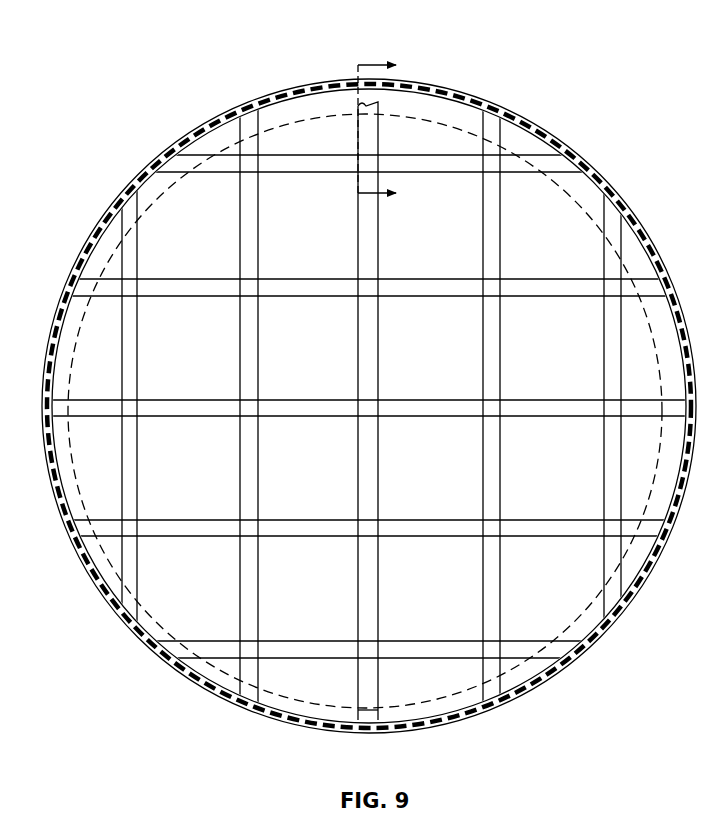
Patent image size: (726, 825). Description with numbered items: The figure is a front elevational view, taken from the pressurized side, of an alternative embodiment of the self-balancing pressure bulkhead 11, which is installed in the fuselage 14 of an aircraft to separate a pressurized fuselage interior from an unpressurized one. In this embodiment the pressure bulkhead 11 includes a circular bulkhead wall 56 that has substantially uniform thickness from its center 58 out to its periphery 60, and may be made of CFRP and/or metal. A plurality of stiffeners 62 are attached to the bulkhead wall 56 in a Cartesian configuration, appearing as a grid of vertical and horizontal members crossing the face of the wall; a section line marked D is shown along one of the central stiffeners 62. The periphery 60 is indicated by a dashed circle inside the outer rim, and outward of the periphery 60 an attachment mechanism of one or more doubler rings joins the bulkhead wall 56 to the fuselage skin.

The pressure bulkhead 11 is at (128, 58).
The fuselage 14 is at (195, 682).
The bulkhead wall 56 is at (308, 134).
The center 58 is at (389, 388).
The periphery 60 is at (585, 192).
The stiffeners 62 is at (373, 238).